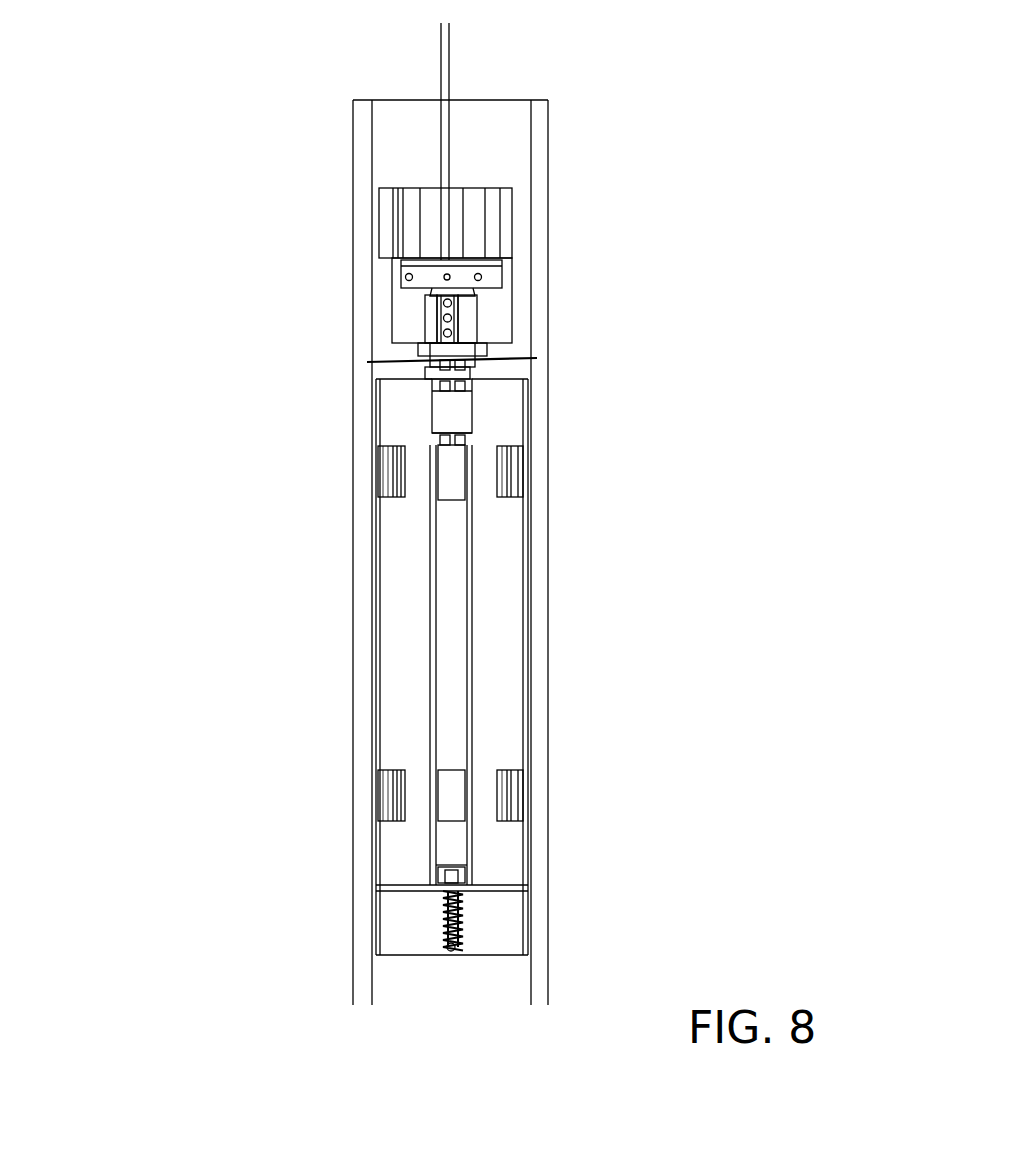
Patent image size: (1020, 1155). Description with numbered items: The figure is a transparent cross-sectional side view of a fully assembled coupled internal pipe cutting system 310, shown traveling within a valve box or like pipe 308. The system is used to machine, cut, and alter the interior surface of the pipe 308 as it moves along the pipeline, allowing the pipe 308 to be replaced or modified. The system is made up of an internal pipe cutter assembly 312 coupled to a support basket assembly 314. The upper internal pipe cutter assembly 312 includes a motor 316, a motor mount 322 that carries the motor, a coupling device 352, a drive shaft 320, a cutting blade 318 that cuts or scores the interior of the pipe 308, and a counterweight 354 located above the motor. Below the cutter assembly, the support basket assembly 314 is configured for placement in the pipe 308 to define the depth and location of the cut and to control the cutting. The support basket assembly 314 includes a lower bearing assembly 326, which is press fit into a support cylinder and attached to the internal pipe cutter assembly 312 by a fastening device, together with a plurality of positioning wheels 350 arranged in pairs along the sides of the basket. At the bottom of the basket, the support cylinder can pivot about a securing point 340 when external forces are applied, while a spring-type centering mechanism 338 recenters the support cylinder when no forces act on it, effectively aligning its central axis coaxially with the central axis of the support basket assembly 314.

The pipe 308 is at (543, 620).
The internal pipe cutting system 310 is at (120, 426).
The internal pipe cutter assembly 312 is at (469, 273).
The support basket assembly 314 is at (546, 553).
The motor 316 is at (418, 272).
The cutting blade 318 is at (368, 361).
The drive shaft 320 is at (462, 312).
The motor mount 322 is at (505, 298).
The lower bearing assembly 326 is at (457, 412).
The centering mechanism 338 is at (424, 913).
The securing point 340 is at (465, 890).
The positioning wheels 350 is at (392, 460).
The coupling device 352 is at (430, 324).
The counterweight 354 is at (387, 209).